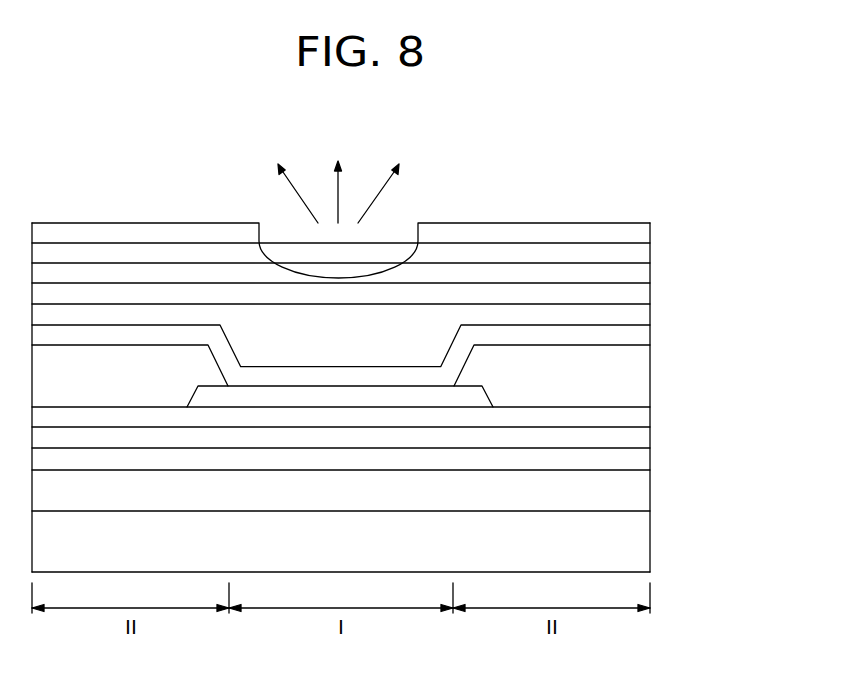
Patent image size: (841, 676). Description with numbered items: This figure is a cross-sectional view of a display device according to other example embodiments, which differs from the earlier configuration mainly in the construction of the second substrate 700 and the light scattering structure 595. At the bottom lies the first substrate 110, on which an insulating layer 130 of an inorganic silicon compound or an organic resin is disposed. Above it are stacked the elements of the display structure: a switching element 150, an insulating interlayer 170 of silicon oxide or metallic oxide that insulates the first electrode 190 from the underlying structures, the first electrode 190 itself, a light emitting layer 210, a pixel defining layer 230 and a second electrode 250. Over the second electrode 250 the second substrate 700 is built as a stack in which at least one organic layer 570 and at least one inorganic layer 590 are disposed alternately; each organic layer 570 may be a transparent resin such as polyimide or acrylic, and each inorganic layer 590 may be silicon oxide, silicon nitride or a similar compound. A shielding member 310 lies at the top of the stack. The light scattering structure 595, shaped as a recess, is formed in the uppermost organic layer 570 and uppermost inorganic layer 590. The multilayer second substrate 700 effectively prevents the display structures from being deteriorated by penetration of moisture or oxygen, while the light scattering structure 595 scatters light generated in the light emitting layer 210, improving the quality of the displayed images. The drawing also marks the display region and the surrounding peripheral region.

The first substrate 110 is at (640, 545).
The insulating layer 130 is at (640, 492).
The switching element 150 is at (640, 462).
The insulating interlayer 170 is at (640, 440).
The first electrode 190 is at (640, 420).
The light emitting layer 210 is at (480, 402).
The pixel defining layer 230 is at (640, 369).
The second electrode 250 is at (640, 340).
The shielding member 310 is at (640, 234).
The organic layer 570 is at (640, 274).
The inorganic layer 590 is at (640, 255).
The light scattering structure 595 is at (380, 260).
The second substrate 700 is at (399, 284).